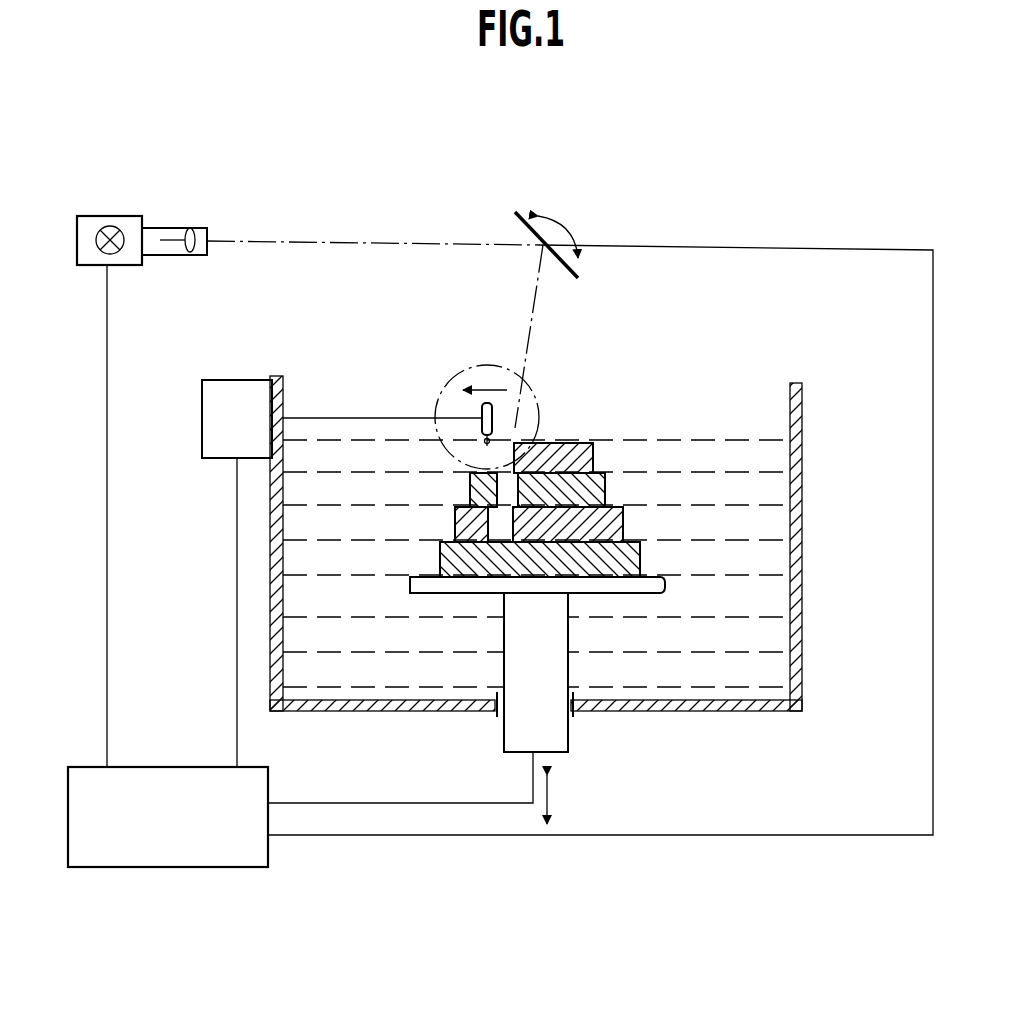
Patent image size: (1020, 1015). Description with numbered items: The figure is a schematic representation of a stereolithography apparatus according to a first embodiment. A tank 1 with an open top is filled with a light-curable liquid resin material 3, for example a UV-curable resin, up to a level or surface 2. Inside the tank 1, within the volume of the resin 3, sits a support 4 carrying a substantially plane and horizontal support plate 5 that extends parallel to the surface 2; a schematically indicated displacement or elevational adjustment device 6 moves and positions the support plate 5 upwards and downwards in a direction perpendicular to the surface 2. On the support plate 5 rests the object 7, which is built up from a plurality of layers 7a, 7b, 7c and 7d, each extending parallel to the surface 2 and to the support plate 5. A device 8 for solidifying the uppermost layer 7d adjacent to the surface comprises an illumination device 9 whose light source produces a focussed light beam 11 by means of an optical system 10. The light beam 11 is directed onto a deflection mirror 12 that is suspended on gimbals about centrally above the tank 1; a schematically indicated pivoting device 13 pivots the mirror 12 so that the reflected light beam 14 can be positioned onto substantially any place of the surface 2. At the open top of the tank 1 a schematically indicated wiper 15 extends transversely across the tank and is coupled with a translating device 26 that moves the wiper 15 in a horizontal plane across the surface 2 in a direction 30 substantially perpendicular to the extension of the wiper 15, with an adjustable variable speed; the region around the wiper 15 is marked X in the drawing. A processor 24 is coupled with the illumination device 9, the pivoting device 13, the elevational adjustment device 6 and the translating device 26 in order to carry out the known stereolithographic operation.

The tank 1 is at (803, 462).
The surface 2 is at (690, 443).
The light-curable liquid resin material 3 is at (767, 675).
The support 4 is at (676, 588).
The support plate 5 is at (667, 580).
The elevational adjustment device 6 is at (552, 800).
The object 7 is at (576, 440).
The layer 7a is at (642, 565).
The layer 7b is at (626, 523).
The layer 7c is at (607, 500).
The uppermost layer 7d is at (597, 458).
The device for solidifying 8 is at (98, 216).
The illumination device 9 is at (112, 230).
The optical system 10 is at (190, 228).
The light beam 11 is at (338, 243).
The deflection mirror 12 is at (528, 227).
The pivoting device 13 is at (568, 228).
The reflected light beam 14 is at (532, 332).
The wiper 15 is at (482, 417).
The processor 24 is at (180, 834).
The translating device 26 is at (237, 407).
The direction 30 is at (493, 397).
The detail region X is at (468, 366).